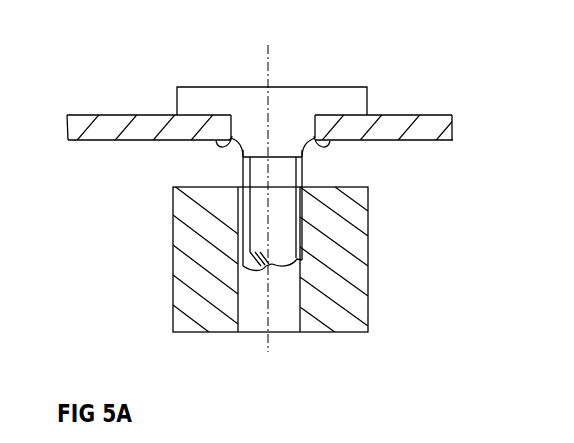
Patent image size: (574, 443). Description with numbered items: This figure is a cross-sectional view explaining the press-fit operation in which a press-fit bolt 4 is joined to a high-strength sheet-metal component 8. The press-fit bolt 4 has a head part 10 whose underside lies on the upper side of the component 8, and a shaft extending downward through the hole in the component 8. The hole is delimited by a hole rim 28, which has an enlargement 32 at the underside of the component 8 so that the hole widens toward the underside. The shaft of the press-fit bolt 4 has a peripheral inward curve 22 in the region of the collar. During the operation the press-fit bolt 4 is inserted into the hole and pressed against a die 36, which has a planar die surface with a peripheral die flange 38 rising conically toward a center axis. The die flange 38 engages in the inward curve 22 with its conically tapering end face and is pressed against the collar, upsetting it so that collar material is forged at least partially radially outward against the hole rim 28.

The press-fit bolt 4 is at (245, 81).
The high-strength sheet-metal component 8 is at (407, 130).
The head part 10 is at (136, 117).
The peripheral inward curve 22 is at (303, 152).
The hole rim 28 is at (312, 123).
The enlargement 32 is at (235, 146).
The die 36 is at (348, 302).
The die flange 38 is at (240, 185).